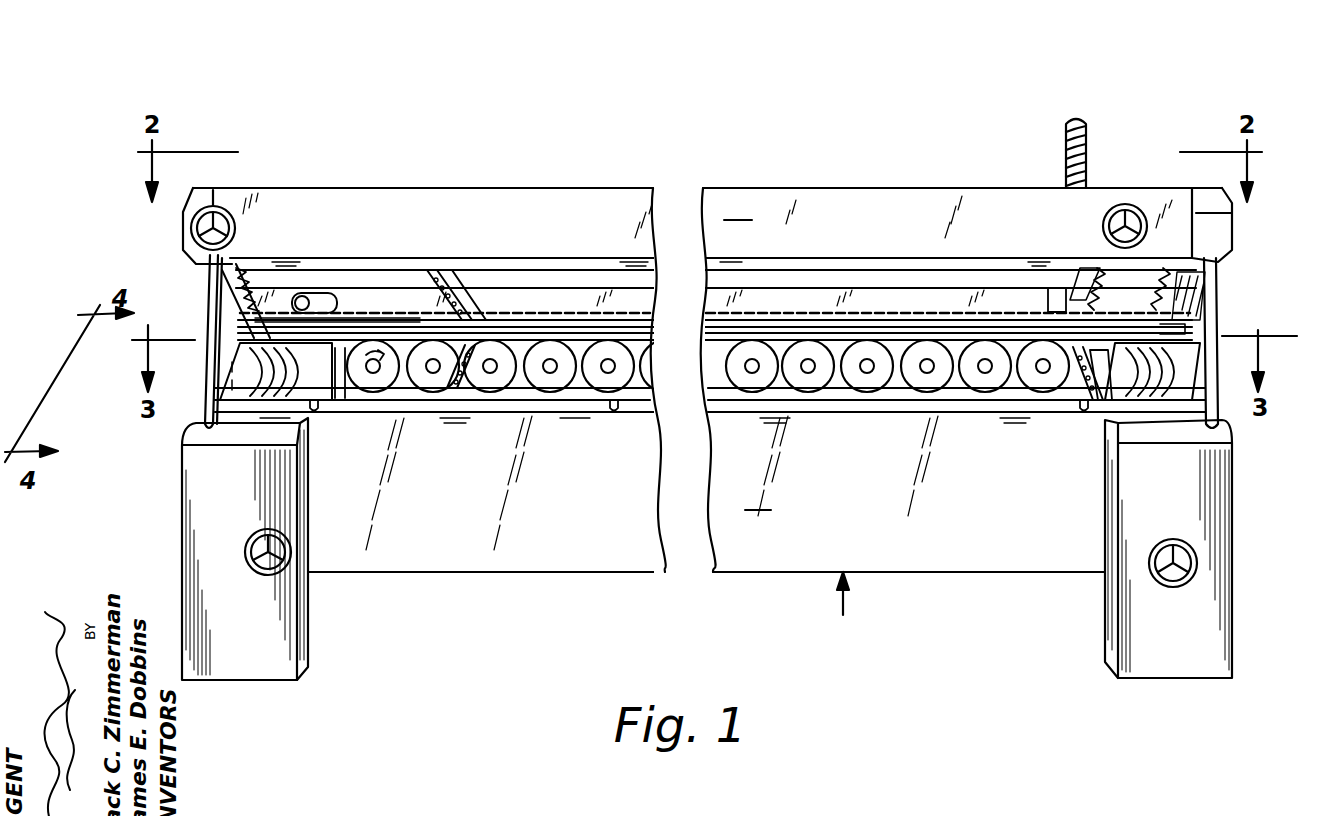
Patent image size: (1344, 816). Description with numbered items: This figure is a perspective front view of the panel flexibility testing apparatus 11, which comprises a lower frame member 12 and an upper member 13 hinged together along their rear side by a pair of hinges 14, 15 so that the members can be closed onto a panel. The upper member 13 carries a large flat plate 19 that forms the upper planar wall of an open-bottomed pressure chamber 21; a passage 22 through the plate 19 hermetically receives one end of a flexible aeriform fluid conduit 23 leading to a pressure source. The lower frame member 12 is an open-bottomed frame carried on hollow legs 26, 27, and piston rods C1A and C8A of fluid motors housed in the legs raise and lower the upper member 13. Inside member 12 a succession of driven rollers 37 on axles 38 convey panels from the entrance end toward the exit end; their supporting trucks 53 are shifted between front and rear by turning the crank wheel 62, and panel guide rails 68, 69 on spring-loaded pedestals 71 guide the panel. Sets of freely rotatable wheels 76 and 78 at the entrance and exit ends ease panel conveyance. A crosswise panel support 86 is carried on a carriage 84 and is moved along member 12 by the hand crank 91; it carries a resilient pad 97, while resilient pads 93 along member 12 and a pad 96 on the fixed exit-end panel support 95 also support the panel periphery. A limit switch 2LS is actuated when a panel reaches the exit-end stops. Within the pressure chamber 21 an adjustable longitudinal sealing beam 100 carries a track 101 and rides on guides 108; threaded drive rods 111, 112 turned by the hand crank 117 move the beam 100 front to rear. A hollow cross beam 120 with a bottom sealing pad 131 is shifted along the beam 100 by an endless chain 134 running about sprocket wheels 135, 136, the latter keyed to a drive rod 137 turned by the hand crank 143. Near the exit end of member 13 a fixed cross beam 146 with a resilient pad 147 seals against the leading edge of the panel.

The panel flexibility testing apparatus 11 is at (843, 635).
The lower frame member 12 is at (710, 480).
The upper member 13 is at (707, 380).
The hinge 14 is at (257, 333).
The hinge 15 is at (1170, 328).
The flat plate 19 is at (853, 280).
The pressure chamber 21 is at (812, 274).
The passage 22 is at (1080, 280).
The fluid conduit 23 is at (1064, 138).
The hollow leg 26 is at (275, 668).
The hollow leg 27 is at (1172, 668).
The roller 37 is at (798, 378).
The axle 38 is at (917, 375).
The truck 53 is at (310, 378).
The crank wheel 62 is at (263, 577).
The panel guide rail 68 is at (557, 330).
The panel guide rail 69 is at (580, 395).
The support pedestal 71 is at (346, 330).
The freely-rotatable wheel 76 is at (246, 372).
The freely-rotatable wheel 78 is at (1170, 366).
The carriage 84 is at (478, 378).
The panel support 86 is at (464, 385).
The hand crank 91 is at (1175, 589).
The resilient pad 93 is at (318, 298).
The panel support 95 is at (1077, 378).
The resilient pad 96 is at (1108, 408).
The resilient panel support pad 97 is at (451, 385).
The sealing beam 100 is at (280, 302).
The track 101 is at (905, 305).
The bottom guide 108 is at (1180, 311).
The drive rod 111 is at (258, 292).
The drive rod 112 is at (1142, 300).
The hand crank 117 is at (190, 228).
The hollow cross beam 120 is at (458, 282).
The resilient sealing pad 131 is at (452, 288).
The endless chain 134 is at (770, 312).
The sprocket wheel 135 is at (338, 330).
The sprocket wheel 136 is at (1038, 297).
The drive rod 137 is at (1094, 286).
The hand crank 143 is at (1124, 204).
The cross beam 146 is at (1115, 268).
The resilient pad 147 is at (1172, 325).
The piston rod C1A is at (226, 420).
The piston rod C8A is at (1200, 398).
The limit switch 2LS is at (1103, 402).